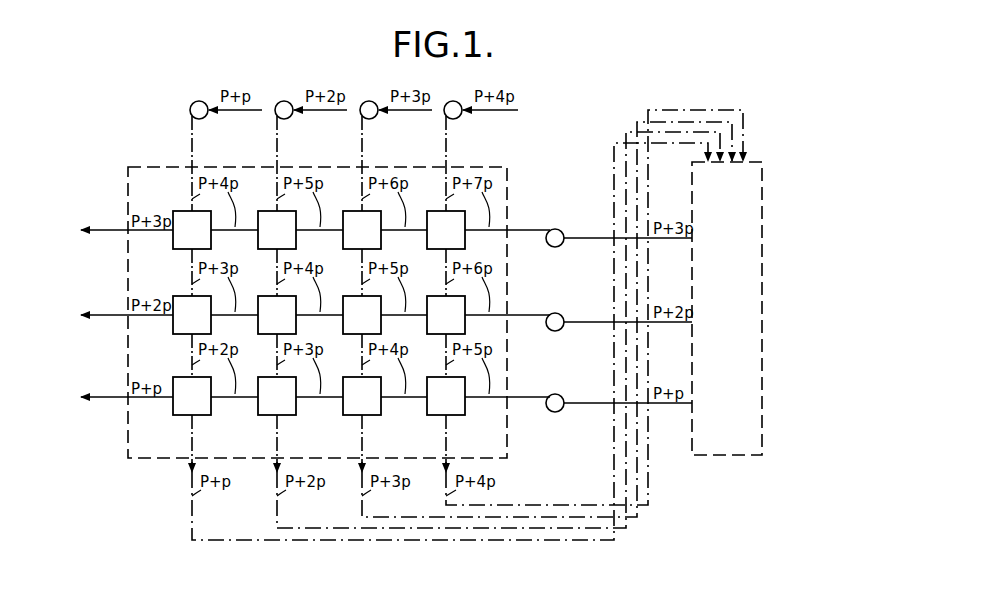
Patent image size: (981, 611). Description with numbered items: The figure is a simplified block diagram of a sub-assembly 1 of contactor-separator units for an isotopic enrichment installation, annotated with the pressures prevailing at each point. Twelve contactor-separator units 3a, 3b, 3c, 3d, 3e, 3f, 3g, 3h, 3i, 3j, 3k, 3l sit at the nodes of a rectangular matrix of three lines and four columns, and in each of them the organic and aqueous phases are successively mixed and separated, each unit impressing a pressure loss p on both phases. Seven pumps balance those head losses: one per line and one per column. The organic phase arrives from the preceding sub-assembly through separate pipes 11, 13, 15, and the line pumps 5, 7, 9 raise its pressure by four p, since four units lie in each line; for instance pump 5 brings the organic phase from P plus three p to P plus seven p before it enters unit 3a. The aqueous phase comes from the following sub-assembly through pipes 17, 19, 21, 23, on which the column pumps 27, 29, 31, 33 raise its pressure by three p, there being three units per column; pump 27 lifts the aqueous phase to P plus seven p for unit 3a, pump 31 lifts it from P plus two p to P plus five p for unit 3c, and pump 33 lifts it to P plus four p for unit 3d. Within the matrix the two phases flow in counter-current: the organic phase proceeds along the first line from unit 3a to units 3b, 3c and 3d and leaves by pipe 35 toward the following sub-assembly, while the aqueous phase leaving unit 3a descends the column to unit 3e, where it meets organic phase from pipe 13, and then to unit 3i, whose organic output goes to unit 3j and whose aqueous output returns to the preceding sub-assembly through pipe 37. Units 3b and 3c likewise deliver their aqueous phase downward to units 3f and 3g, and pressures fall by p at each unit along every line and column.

The sub-assembly 1 is at (510, 203).
The contactor-separator unit 3a is at (446, 230).
The contactor-separator unit 3b is at (362, 230).
The contactor-separator unit 3c is at (277, 230).
The contactor-separator unit 3d is at (192, 230).
The contactor-separator unit 3e is at (446, 315).
The contactor-separator unit 3f is at (362, 315).
The contactor-separator unit 3g is at (277, 315).
The contactor-separator unit 3h is at (192, 315).
The contactor-separator unit 3i is at (446, 396).
The contactor-separator unit 3j is at (362, 396).
The contactor-separator unit 3k is at (277, 396).
The contactor-separator unit 3l is at (192, 396).
The pump 5 is at (555, 247).
The pump 7 is at (556, 331).
The pump 9 is at (558, 412).
The pipe 11 is at (536, 229).
The pipe 13 is at (536, 314).
The pipe 15 is at (536, 396).
The pipe 17 is at (446, 144).
The pipe 19 is at (362, 145).
The pipe 21 is at (277, 144).
The pipe 23 is at (191, 143).
The pump 27 is at (454, 101).
The pump 29 is at (370, 101).
The pump 31 is at (285, 101).
The pump 33 is at (200, 101).
The pipe 35 is at (104, 223).
The pipe 37 is at (447, 446).